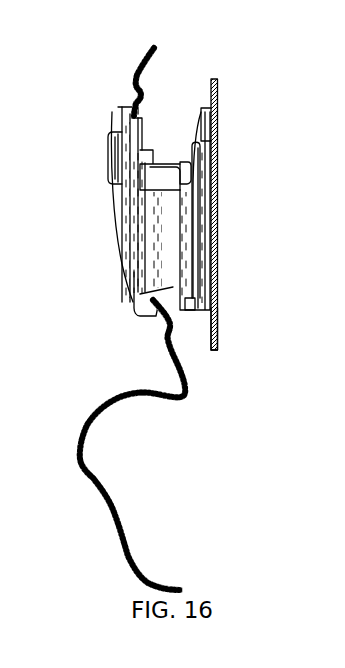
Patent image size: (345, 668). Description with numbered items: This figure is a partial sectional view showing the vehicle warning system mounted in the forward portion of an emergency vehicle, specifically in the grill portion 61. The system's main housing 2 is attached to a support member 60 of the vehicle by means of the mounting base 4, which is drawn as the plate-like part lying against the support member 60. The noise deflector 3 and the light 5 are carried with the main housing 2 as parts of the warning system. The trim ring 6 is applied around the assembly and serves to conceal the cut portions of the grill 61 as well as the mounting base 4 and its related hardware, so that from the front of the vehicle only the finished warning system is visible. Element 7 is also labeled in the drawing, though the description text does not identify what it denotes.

The main housing 2 is at (162, 231).
The noise deflector 3 is at (106, 222).
The mounting base 4 is at (205, 104).
The light 5 is at (101, 147).
The trim ring 6 is at (130, 302).
The contact 7 is at (153, 155).
The support member 60 is at (210, 324).
The grill portion 61 is at (85, 470).